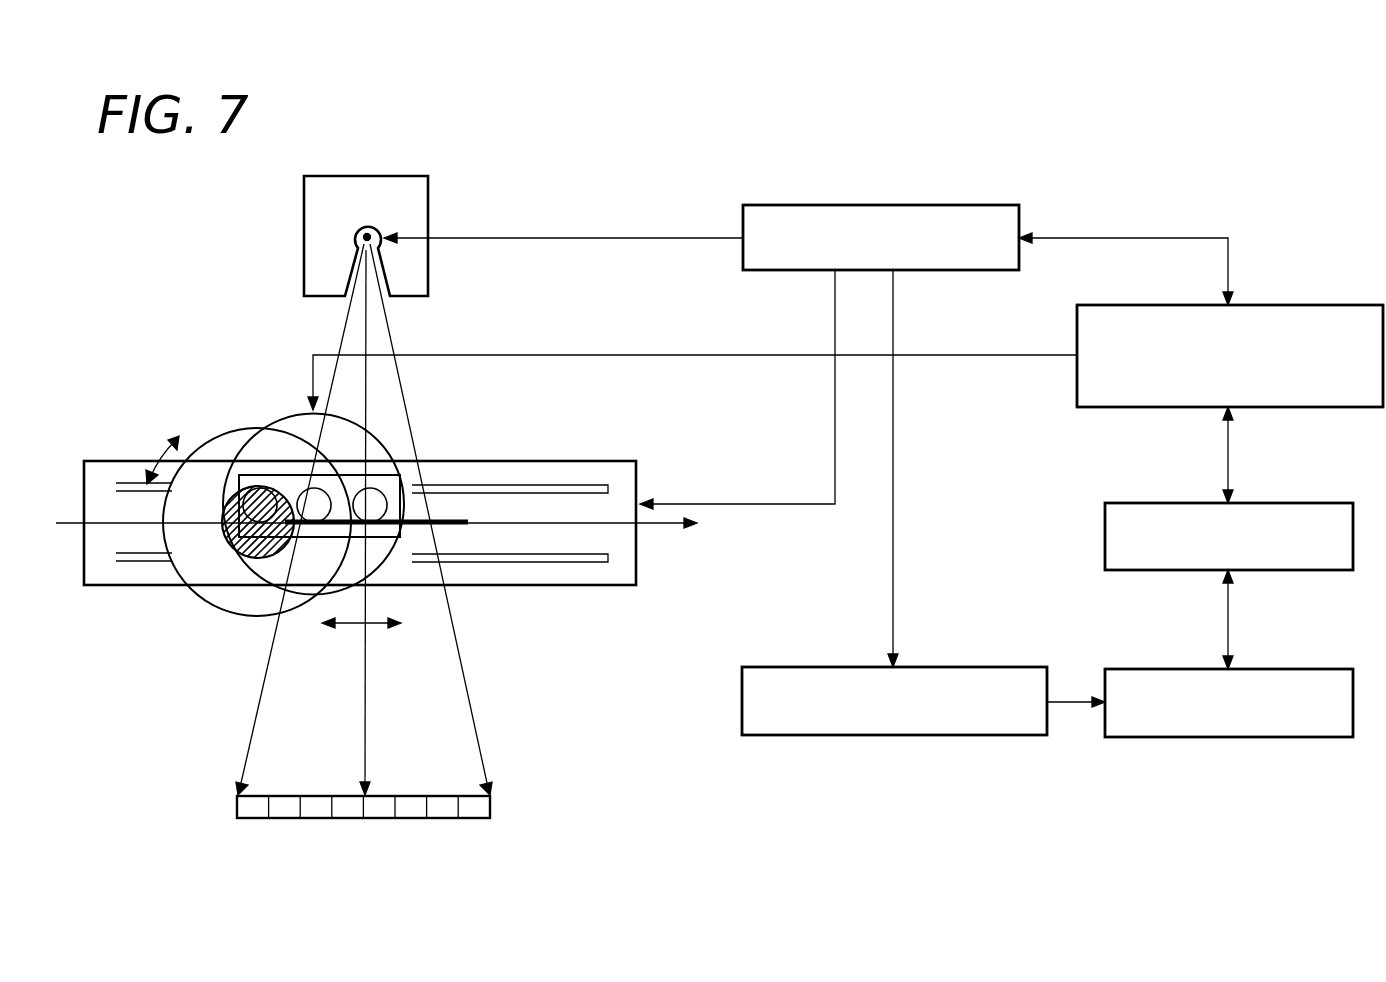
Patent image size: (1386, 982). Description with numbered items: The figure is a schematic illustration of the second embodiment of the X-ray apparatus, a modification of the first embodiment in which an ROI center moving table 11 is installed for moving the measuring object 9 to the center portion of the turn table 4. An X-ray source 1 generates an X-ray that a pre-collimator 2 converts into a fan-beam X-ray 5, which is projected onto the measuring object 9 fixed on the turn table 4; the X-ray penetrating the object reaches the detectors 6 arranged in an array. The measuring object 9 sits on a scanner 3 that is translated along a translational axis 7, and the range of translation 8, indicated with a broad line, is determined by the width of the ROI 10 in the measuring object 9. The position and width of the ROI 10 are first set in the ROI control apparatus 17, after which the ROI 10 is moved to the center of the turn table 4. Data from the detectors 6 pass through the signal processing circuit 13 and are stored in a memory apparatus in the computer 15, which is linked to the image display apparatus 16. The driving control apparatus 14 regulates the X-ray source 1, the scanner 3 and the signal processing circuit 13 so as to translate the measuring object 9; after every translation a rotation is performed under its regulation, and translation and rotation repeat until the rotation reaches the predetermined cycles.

The X-ray source 1 is at (369, 224).
The pre-collimator 2 is at (323, 233).
The scanner 3 is at (515, 475).
The turn table 4 is at (221, 457).
The fan-beam X-ray 5 is at (446, 692).
The detectors arranged in an array 6 is at (250, 803).
The translational axis 7 is at (661, 530).
The range of translation 8 is at (458, 517).
The measuring object 9 is at (340, 479).
The ROI in the measuring object 10 is at (255, 545).
The ROI center moving table 11 is at (288, 431).
The signal processing circuit 13 is at (970, 667).
The driving control apparatus 14 is at (965, 205).
The computer 15 is at (1316, 669).
The image display apparatus 16 is at (1316, 503).
The ROI control apparatus 17 is at (1310, 305).